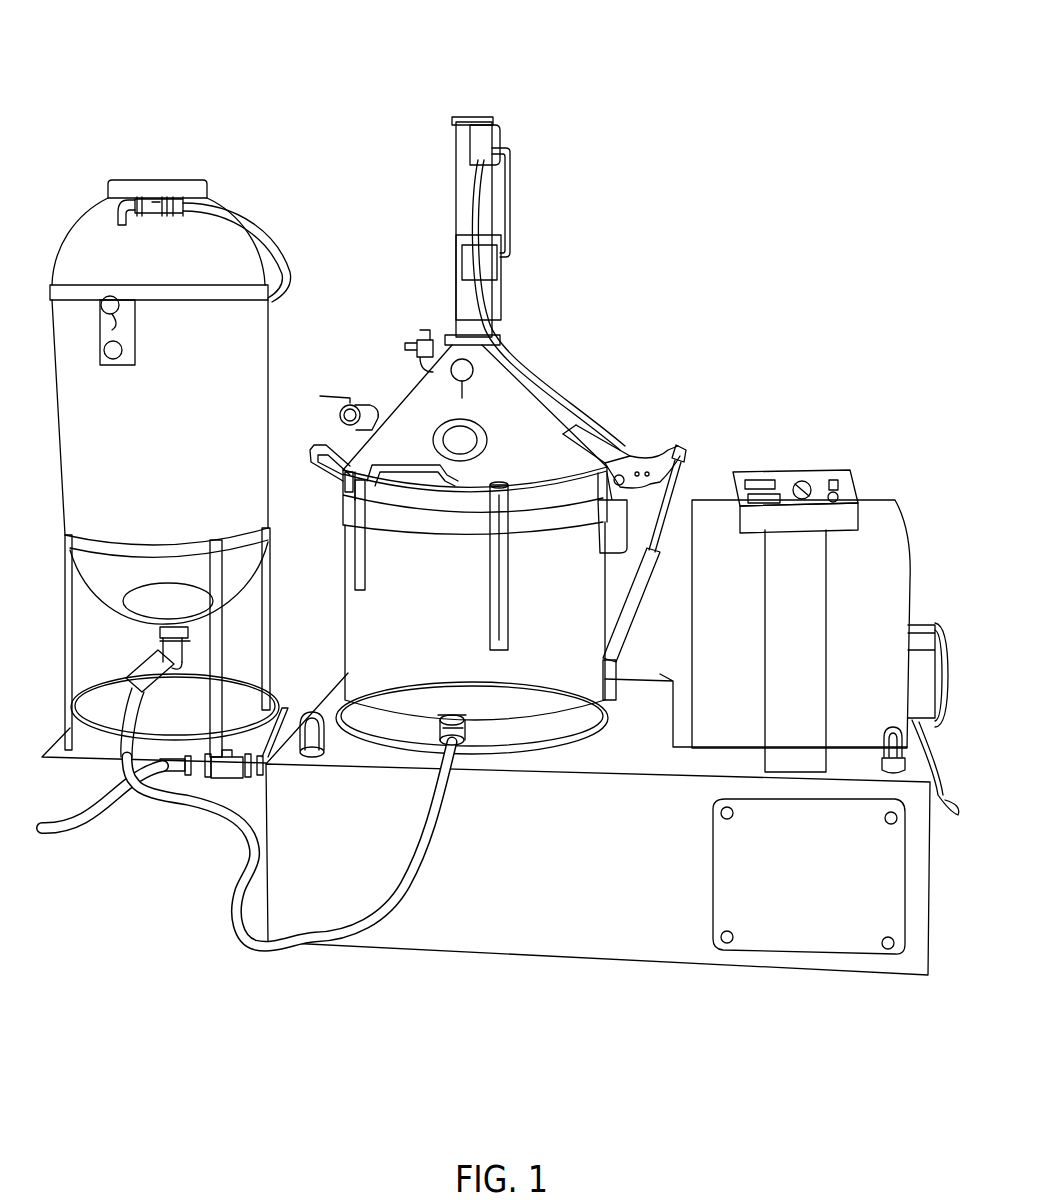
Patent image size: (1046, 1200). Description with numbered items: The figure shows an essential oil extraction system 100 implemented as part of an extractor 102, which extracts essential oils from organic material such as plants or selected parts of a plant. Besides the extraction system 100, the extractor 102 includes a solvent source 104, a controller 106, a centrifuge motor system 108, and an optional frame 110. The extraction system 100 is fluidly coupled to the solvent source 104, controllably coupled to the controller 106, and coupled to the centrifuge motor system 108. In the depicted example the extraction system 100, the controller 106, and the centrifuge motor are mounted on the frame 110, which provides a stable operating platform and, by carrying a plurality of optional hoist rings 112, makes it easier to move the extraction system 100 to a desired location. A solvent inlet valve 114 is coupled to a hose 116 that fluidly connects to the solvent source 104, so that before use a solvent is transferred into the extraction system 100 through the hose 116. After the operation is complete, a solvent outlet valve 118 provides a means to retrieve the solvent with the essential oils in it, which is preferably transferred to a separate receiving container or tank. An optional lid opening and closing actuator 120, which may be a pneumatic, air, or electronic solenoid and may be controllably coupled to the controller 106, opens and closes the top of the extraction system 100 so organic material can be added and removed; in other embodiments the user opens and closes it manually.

The essential oil extraction system 100 is at (572, 321).
The extractor 102 is at (796, 83).
The solvent source 104 is at (224, 156).
The controller 106 is at (790, 470).
The centrifuge motor system 108 is at (876, 500).
The frame 110 is at (673, 932).
The hoist rings 112 is at (305, 712).
The solvent inlet valve 114 is at (458, 722).
The hose 116 is at (262, 952).
The solvent outlet valve 118 is at (222, 770).
The lid opening and closing actuator 120 is at (698, 481).